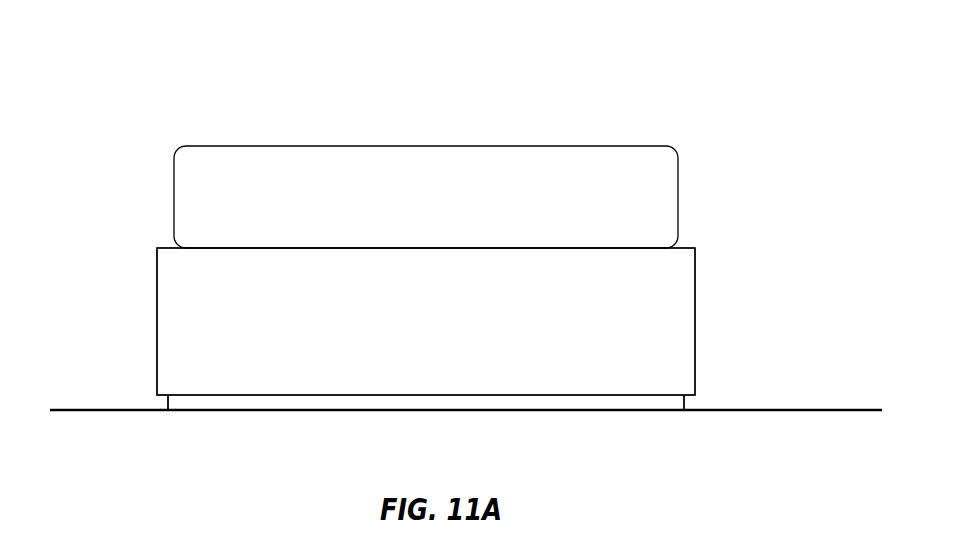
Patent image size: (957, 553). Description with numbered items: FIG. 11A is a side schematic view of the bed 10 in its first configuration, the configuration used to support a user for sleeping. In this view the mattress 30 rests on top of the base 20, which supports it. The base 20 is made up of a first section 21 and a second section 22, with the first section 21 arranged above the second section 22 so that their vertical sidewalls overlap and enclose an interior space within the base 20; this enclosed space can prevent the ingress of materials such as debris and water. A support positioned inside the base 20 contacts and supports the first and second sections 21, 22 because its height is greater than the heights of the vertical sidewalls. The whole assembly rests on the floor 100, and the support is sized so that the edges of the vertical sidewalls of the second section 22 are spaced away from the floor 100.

The bed 10 is at (597, 96).
The base 20 is at (157, 331).
The first section 21 is at (192, 403).
The second section 22 is at (172, 311).
The mattress 30 is at (208, 202).
The floor 100 is at (87, 449).